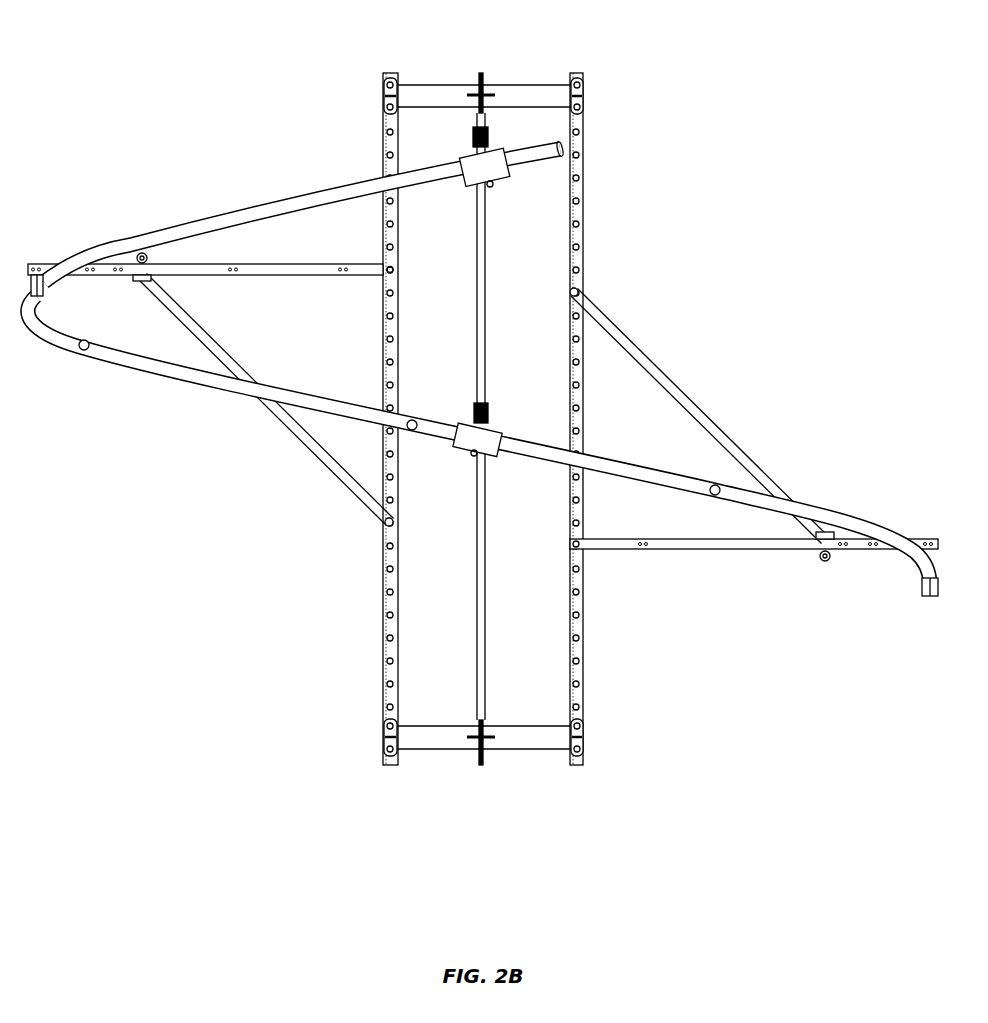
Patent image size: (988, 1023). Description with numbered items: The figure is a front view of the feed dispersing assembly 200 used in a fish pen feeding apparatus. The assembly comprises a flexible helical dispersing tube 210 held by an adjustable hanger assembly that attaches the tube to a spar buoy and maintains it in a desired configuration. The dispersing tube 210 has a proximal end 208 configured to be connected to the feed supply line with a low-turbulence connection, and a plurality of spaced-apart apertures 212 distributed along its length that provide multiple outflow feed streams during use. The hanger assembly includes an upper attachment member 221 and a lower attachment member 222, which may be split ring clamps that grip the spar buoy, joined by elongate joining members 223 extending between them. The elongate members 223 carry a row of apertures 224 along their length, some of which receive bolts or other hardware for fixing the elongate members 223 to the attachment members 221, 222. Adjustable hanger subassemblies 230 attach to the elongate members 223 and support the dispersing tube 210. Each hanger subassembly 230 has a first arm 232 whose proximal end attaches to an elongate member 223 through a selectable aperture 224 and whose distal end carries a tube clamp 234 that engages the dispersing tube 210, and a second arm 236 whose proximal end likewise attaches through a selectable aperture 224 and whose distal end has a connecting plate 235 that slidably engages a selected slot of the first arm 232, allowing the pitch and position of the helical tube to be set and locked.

The feed dispersing assembly 200 is at (482, 419).
The proximal end 208 is at (533, 150).
The helical dispersing tube 210 is at (306, 161).
The apertures 212 is at (85, 350).
The upper attachment member 221 is at (439, 80).
The lower attachment member 222 is at (435, 758).
The elongate joining members 223 is at (590, 240).
The apertures 224 is at (586, 128).
The adjustable hanger subassemblies 230 is at (484, 403).
The first arm 232 is at (248, 275).
The tube clamp 234 is at (50, 290).
The connecting plate 235 is at (142, 252).
The second arm 236 is at (485, 297).